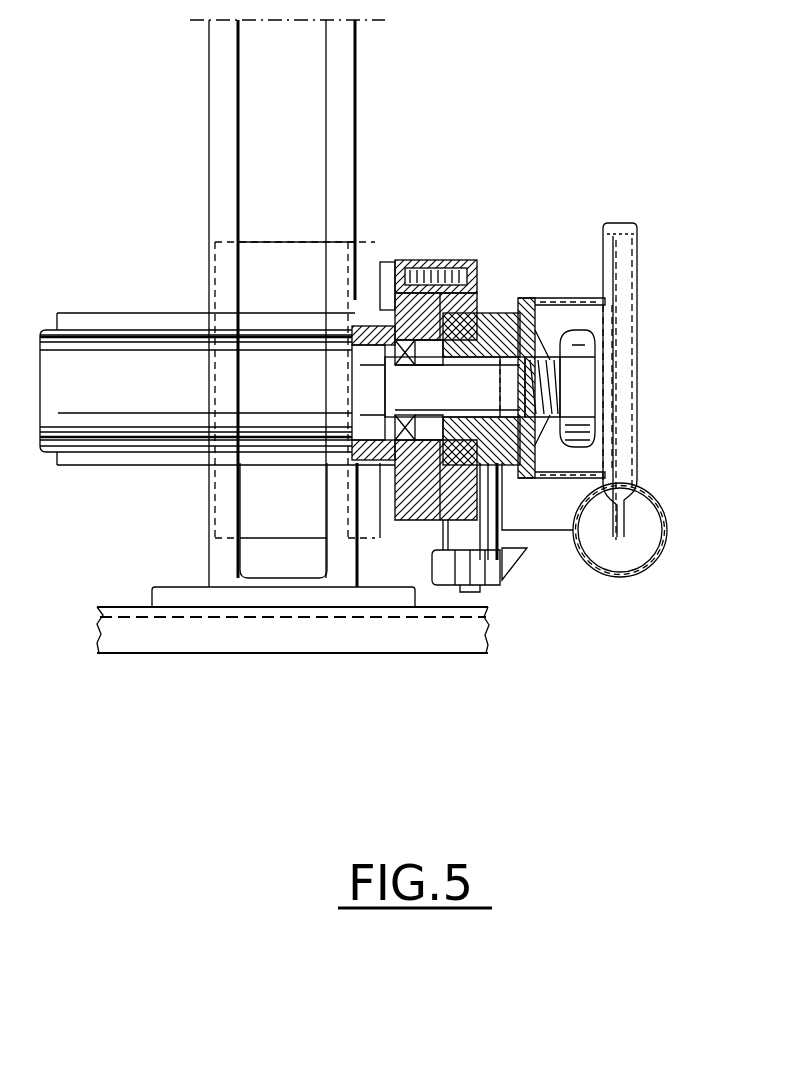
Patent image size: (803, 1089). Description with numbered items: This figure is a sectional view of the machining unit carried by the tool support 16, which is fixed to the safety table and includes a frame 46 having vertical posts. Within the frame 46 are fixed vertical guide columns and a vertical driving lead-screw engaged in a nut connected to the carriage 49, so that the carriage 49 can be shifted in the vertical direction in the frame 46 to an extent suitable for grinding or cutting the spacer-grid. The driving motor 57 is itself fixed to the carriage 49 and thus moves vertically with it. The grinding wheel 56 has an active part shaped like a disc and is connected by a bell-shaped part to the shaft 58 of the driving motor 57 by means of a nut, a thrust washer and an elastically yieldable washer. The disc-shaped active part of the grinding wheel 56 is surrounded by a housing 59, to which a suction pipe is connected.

The tool support 16 is at (190, 110).
The frame 46 is at (229, 192).
The carriage 49 is at (372, 245).
The grinding wheel 56 is at (624, 514).
The driving motor 57 is at (246, 388).
The shaft 58 is at (485, 312).
The housing 59 is at (634, 578).